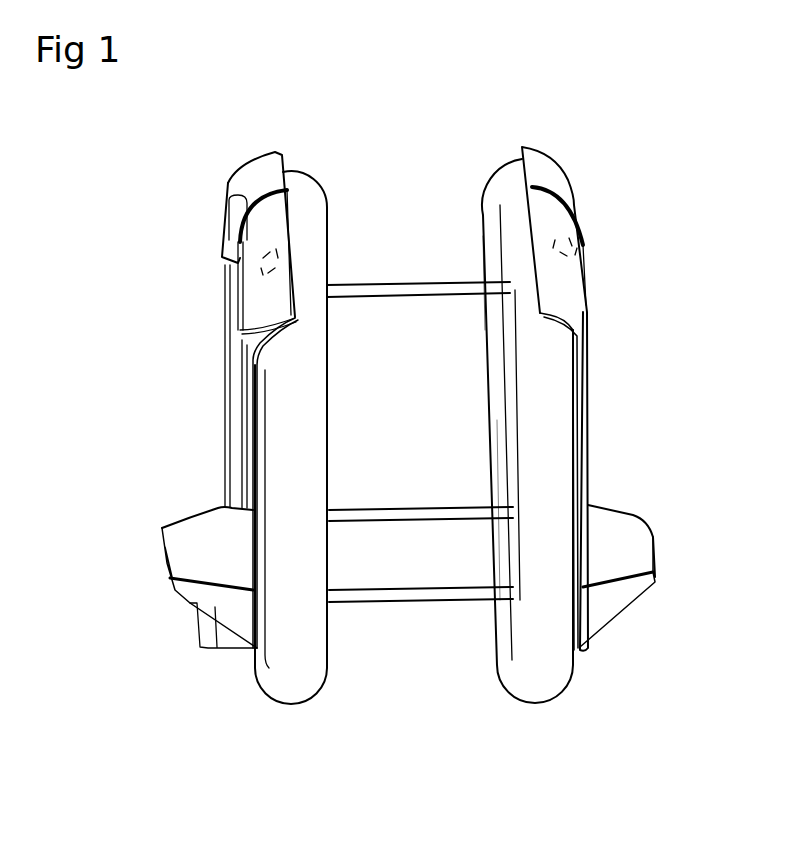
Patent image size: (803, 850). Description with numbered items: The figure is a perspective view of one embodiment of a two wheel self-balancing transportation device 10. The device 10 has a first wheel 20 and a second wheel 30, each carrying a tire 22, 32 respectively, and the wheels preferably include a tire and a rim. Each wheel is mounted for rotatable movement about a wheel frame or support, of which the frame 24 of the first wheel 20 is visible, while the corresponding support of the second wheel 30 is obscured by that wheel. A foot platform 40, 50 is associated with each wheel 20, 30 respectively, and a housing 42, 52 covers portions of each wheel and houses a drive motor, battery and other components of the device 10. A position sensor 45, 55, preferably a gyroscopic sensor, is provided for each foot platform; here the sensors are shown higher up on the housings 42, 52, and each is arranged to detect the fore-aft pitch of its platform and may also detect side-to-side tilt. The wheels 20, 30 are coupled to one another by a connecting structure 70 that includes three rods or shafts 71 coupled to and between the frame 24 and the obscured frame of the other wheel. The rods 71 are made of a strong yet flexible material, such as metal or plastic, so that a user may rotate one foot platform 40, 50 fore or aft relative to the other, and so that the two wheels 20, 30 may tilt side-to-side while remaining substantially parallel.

The two wheel self-balancing transportation device 10 is at (576, 85).
The first wheel 20 is at (579, 750).
The tire 22 is at (568, 682).
The wheel frame or support 24 is at (503, 385).
The second wheel 30 is at (265, 761).
The tire 32 is at (265, 695).
The foot platform 40 is at (674, 477).
The housing 42 is at (563, 165).
The position sensor 45 is at (587, 240).
The foot platform 50 is at (157, 498).
The housing 52 is at (236, 174).
The position sensor 55 is at (222, 270).
The connecting structure 70 is at (403, 232).
The rods or shafts 71 is at (400, 603).